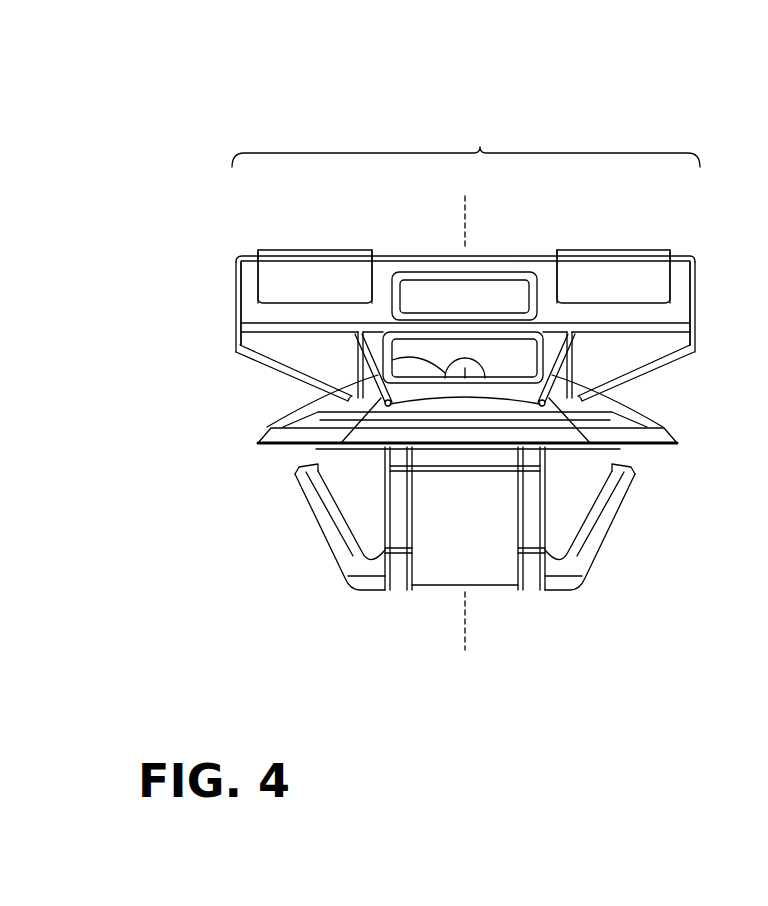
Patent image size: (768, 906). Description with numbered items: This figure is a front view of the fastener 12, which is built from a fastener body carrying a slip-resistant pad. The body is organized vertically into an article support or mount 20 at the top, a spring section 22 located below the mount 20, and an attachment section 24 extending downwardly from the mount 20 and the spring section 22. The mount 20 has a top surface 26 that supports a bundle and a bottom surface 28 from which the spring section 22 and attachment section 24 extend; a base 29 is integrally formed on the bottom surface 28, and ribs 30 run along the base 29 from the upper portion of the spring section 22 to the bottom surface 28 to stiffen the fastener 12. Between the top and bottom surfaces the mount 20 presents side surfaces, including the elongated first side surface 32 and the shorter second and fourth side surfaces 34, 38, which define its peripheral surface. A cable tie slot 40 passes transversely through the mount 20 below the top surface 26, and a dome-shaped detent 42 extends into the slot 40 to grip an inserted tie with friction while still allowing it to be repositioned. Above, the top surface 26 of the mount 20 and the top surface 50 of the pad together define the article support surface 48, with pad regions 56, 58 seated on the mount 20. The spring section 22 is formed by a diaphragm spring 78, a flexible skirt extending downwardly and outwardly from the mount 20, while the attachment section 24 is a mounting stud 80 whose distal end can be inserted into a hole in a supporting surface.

The fastener 12 is at (143, 147).
The mount 20 is at (163, 242).
The spring section 22 is at (163, 397).
The attachment section 24 is at (163, 457).
The top surface 26 is at (245, 255).
The bottom surface 28 is at (270, 329).
The base 29 is at (583, 373).
The ribs 30 is at (625, 362).
The first side surface 32 is at (627, 313).
The second side surface 34 is at (238, 305).
The fourth side surface 38 is at (693, 282).
The slot 40 is at (493, 370).
The detent 42 is at (388, 358).
The article support surface 48 is at (466, 141).
The top surface 50 is at (350, 253).
The first pad 56 is at (322, 268).
The second pad 58 is at (607, 268).
The diaphragm spring 78 is at (271, 430).
The mounting stud 80 is at (612, 528).